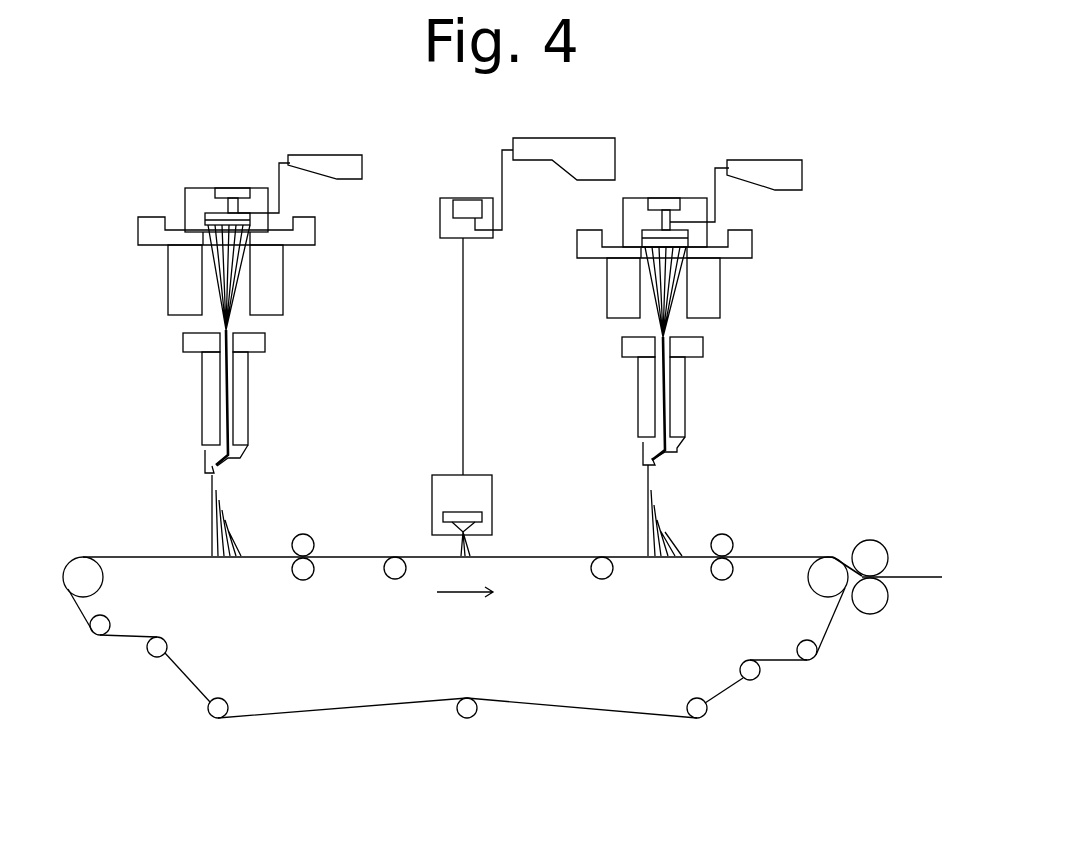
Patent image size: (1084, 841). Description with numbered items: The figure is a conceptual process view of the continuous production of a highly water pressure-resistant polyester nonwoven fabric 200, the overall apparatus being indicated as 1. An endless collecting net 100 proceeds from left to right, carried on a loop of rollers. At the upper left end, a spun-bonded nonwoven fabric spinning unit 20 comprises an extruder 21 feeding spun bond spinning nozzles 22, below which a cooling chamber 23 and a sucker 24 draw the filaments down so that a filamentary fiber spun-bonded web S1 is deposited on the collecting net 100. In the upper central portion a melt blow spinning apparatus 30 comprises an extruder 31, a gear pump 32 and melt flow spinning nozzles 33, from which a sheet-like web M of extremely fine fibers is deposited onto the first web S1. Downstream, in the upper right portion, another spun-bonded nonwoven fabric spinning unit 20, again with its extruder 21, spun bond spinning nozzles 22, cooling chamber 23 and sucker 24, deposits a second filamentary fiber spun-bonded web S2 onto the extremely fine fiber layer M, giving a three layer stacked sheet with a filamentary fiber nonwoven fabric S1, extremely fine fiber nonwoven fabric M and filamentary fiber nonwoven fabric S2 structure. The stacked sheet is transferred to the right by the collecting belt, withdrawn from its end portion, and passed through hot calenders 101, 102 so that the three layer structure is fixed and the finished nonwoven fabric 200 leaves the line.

The nonwoven fabric manufacturing apparatus 1 is at (815, 350).
The spun-bonded nonwoven fabric spinning unit 20 is at (371, 135).
The extruder 21 is at (355, 167).
The spun bond spinning nozzles 22 is at (216, 217).
The cooling chamber 23 is at (274, 276).
The sucker 24 is at (240, 408).
The melt blow spinning apparatus 30 is at (626, 129).
The extruder 31 is at (606, 163).
The gear pump 32 is at (442, 214).
The melt flow spinning nozzles 33 is at (443, 515).
The sheet-like web of extremely fine fibers M is at (520, 528).
The filamentary fiber spun-bonded web S1 is at (244, 515).
The filamentary fiber spun-bonded web S2 is at (682, 510).
The endless collecting net 100 is at (138, 553).
The hot calender 101 is at (865, 550).
The hot calender 102 is at (870, 603).
The highly water pressure-resistant polyester nonwoven fabric 200 is at (917, 578).